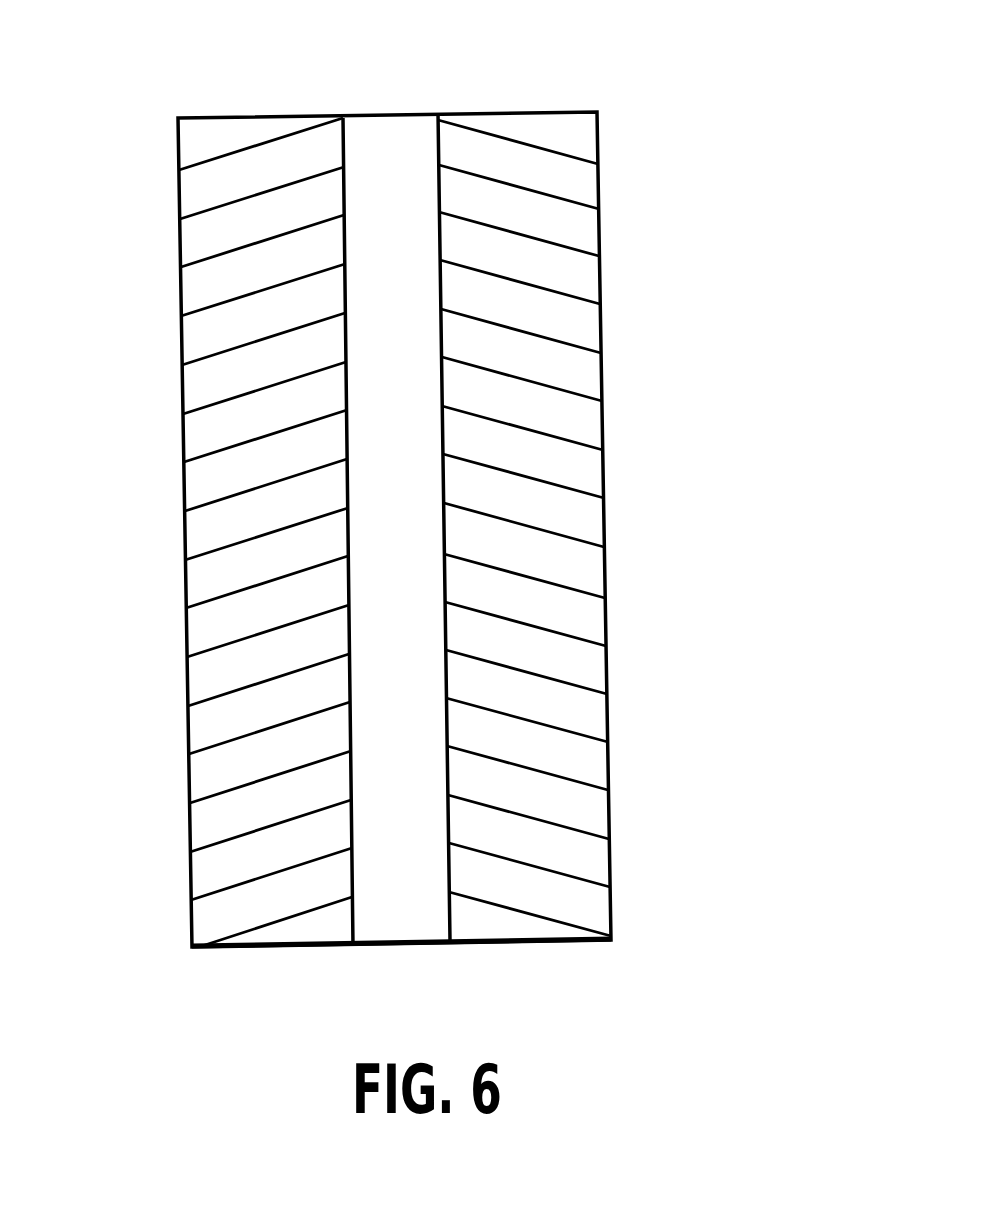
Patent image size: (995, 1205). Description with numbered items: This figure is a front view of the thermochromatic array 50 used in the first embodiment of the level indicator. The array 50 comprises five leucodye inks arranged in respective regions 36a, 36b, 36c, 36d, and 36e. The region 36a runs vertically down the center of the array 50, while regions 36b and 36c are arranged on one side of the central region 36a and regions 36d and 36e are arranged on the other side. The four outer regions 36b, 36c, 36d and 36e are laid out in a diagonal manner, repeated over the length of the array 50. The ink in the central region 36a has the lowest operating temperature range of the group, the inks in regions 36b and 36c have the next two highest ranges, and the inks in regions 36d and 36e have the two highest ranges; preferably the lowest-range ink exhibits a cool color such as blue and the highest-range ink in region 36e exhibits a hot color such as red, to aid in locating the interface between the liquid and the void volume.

The thermochromatic array 50 is at (613, 97).
The region 36a is at (417, 920).
The region 36b is at (179, 190).
The region 36c is at (178, 141).
The region 36d is at (587, 176).
The region 36e is at (586, 128).